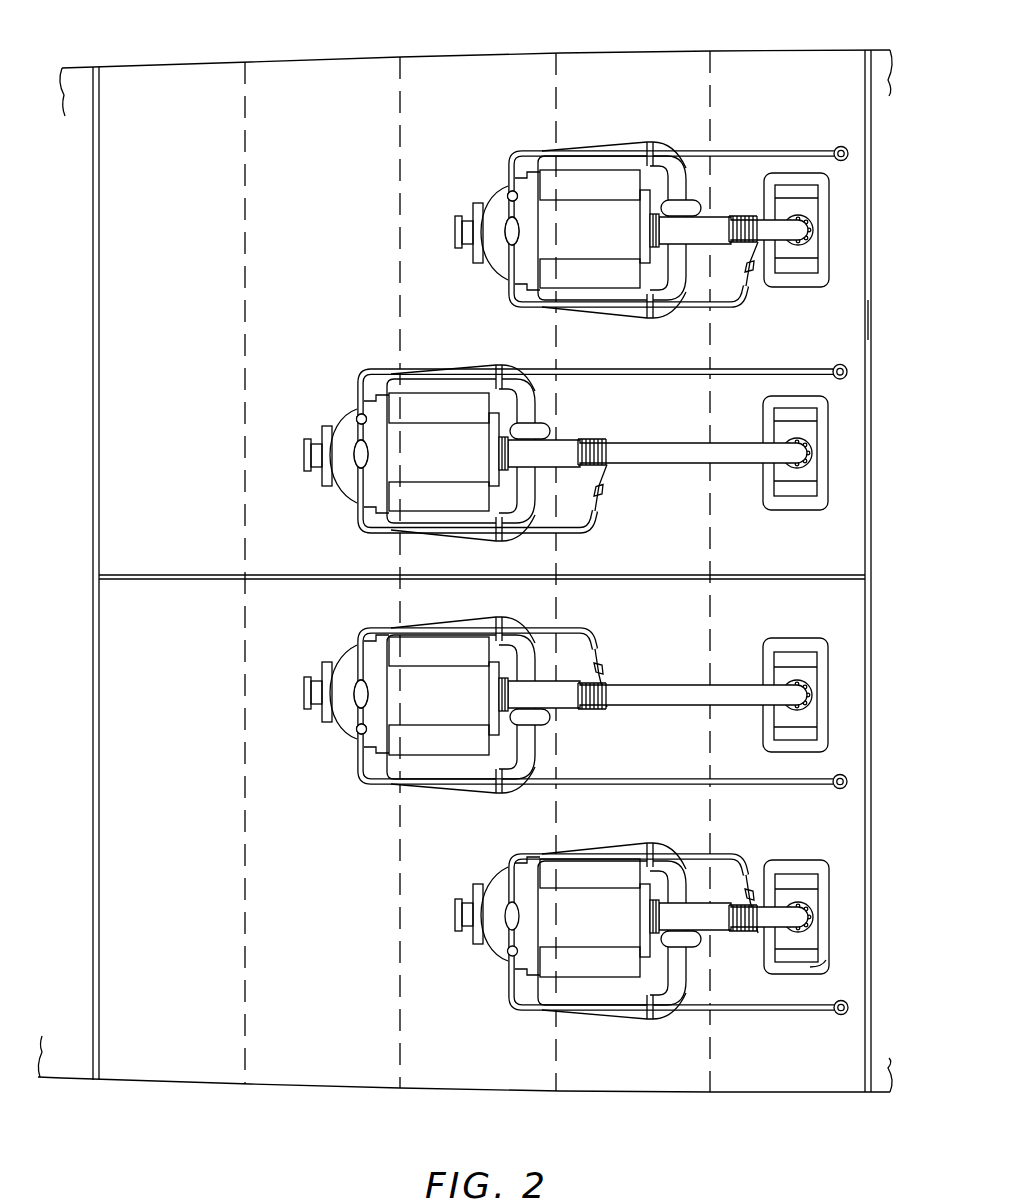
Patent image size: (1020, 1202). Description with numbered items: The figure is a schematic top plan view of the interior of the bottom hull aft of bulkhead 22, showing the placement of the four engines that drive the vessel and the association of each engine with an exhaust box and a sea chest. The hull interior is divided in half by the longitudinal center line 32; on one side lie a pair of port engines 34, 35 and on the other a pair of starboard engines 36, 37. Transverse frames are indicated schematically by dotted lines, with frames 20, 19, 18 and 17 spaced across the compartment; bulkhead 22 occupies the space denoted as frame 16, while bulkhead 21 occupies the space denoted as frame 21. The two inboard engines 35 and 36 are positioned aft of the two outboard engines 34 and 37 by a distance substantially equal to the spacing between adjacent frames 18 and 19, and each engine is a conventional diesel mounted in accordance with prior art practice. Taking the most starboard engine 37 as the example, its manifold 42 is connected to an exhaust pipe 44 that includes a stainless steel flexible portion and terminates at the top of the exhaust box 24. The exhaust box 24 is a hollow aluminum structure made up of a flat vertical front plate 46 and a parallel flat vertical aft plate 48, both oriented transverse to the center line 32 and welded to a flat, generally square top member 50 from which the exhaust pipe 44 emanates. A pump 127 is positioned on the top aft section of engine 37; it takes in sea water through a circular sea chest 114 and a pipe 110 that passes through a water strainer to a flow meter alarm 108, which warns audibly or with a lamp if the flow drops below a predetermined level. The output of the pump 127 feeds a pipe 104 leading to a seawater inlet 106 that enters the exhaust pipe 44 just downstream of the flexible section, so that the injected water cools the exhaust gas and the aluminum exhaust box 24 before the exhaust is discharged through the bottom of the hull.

The frame 16 is at (872, 546).
The frame 17 is at (708, 550).
The frame 18 is at (550, 549).
The frame 19 is at (402, 548).
The frame 20 is at (242, 550).
The bulkhead 21 is at (99, 541).
The bulkhead 22 is at (865, 323).
The exhaust box 24 is at (805, 860).
The longitudinal center line 32 is at (756, 574).
The port engine 34 is at (496, 181).
The port engine 35 is at (343, 406).
The starboard engine 36 is at (338, 650).
The starboard engine 37 is at (642, 939).
The manifold 42 is at (657, 995).
The exhaust pipe 44 is at (683, 917).
The front plate 46 is at (820, 950).
The aft plate 48 is at (767, 949).
The square shaped aluminum member 50 is at (812, 935).
The pipe 104 is at (533, 848).
The seawater inlet 106 is at (757, 880).
The flow meter alarm 108 is at (510, 952).
The pipe 110 is at (577, 1013).
The sea chest 114 is at (838, 1020).
The pump 127 is at (514, 917).